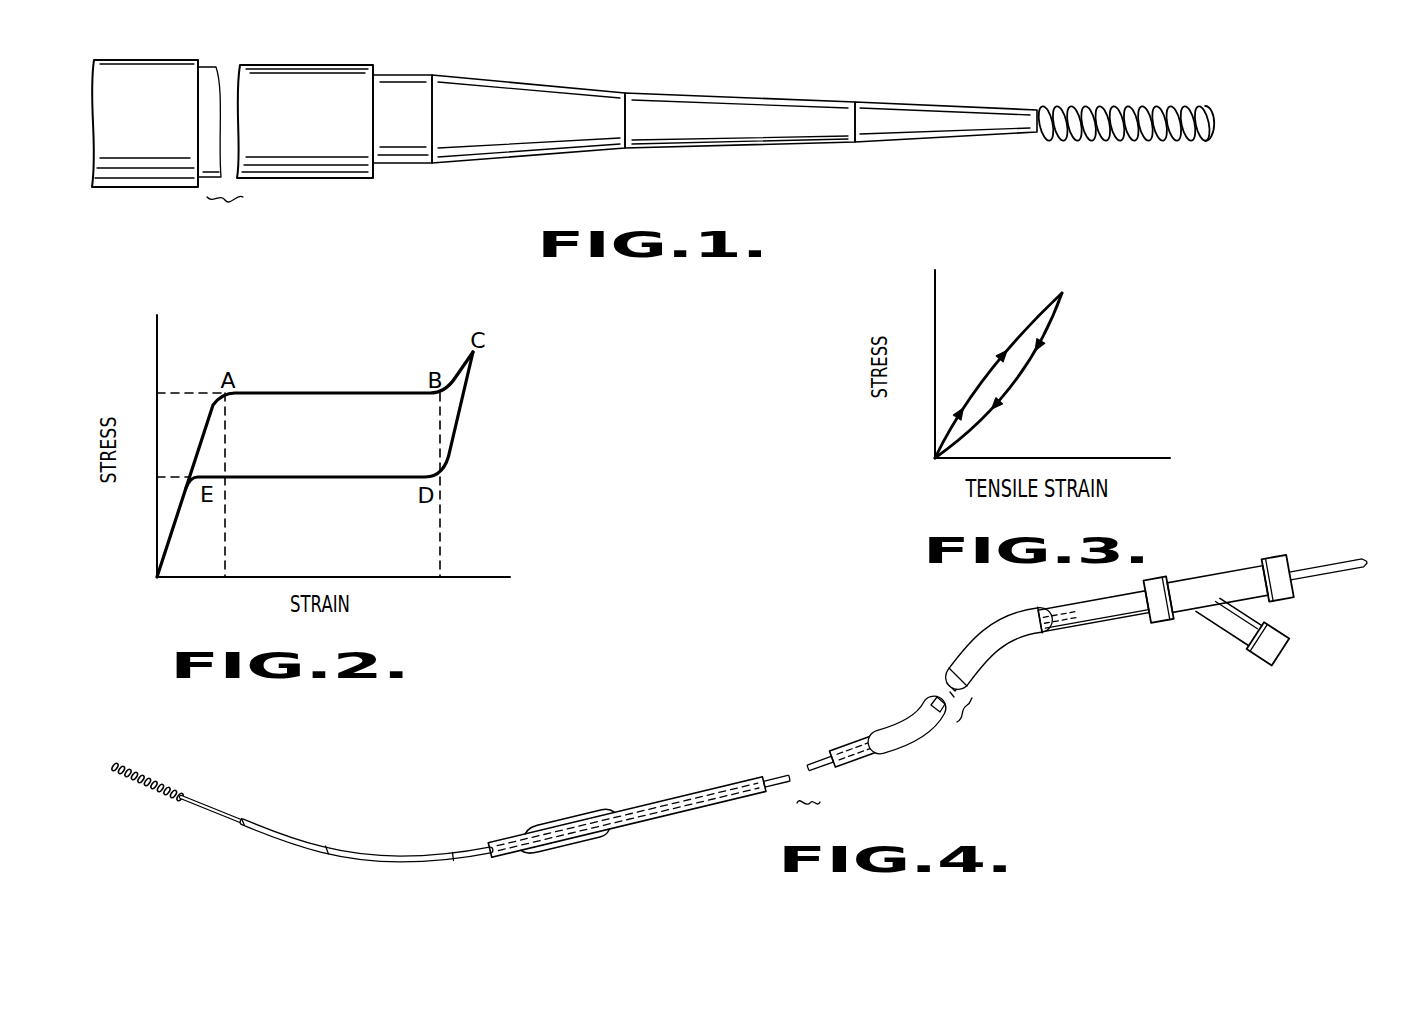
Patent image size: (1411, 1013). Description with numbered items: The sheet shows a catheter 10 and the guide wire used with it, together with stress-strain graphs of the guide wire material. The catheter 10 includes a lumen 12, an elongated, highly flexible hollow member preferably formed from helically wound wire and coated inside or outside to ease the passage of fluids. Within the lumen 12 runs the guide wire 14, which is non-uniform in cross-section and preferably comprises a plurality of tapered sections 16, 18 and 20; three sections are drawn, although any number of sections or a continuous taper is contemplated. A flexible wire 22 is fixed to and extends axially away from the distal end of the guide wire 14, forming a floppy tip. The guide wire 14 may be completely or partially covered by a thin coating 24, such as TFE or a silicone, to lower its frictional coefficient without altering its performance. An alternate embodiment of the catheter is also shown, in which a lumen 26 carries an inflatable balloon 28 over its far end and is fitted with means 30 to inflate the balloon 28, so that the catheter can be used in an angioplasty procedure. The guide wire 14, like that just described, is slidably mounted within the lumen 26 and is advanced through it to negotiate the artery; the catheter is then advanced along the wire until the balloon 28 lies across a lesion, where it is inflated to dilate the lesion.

In FIG. 1, the catheter 10 is at (182, 188).
In FIG. 1, the lumen 12 is at (307, 178).
In FIG. 1, the guide wire 14 is at (408, 167).
In FIG. 4, the guide wire 14 is at (471, 847).
In FIG. 1, the tapered section 16 is at (537, 151).
In FIG. 1, the tapered section 18 is at (728, 150).
In FIG. 1, the tapered section 20 is at (915, 141).
In FIG. 1, the flexible wire 22 is at (1117, 139).
In FIG. 1, the coating 24 is at (680, 136).
In FIG. 4, the lumen 26 is at (733, 781).
In FIG. 4, the inflatable balloon 28 is at (585, 811).
In FIG. 4, the means to inflate the balloon 30 is at (1270, 663).